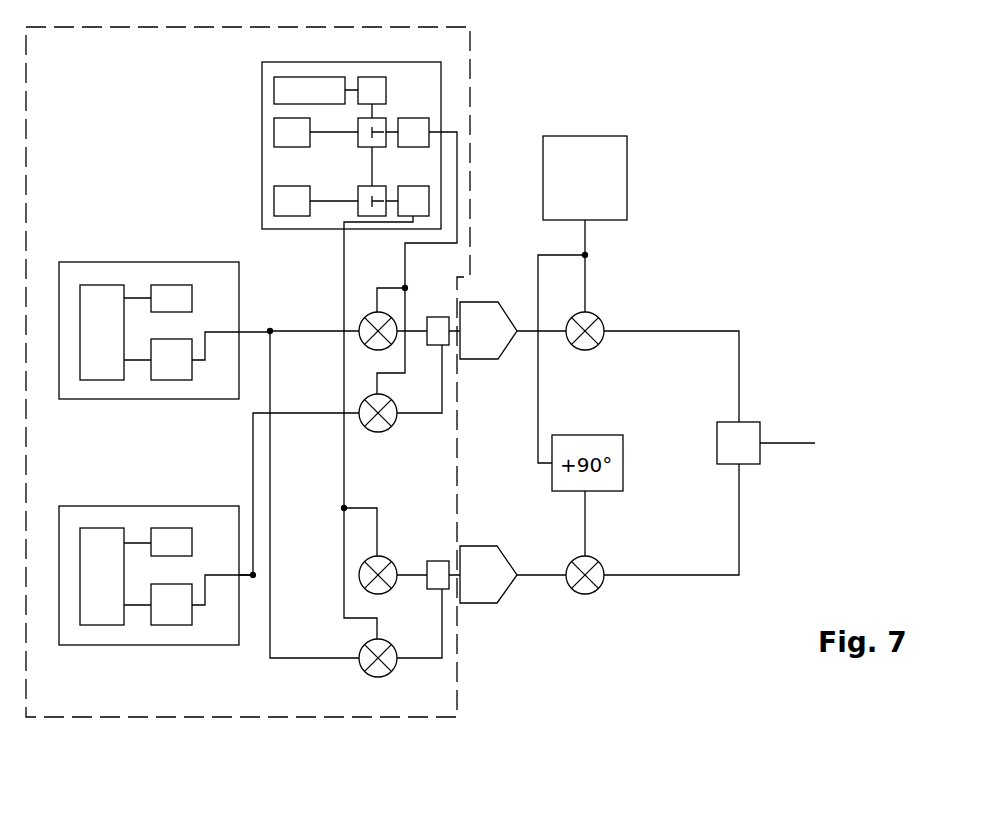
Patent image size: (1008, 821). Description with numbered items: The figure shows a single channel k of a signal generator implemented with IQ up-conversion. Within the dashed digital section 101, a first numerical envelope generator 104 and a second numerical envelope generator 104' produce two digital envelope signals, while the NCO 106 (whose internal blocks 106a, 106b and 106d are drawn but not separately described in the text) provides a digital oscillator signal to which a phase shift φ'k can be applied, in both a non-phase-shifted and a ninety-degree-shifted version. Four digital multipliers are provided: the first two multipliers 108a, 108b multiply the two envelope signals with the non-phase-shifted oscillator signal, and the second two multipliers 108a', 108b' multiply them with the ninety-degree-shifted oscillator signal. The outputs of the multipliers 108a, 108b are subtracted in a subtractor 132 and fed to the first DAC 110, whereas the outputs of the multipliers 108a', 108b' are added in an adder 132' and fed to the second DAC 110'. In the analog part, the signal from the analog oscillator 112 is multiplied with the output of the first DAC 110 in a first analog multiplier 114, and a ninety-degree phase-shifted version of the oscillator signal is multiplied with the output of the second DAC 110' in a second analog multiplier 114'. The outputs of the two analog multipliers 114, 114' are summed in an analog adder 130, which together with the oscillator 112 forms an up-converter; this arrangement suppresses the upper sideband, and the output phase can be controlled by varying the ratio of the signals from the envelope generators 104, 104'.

The digital section 101 is at (192, 718).
The first numerical envelope generator 104 is at (164, 298).
The second numerical envelope generator 104' is at (156, 544).
The NCO 106 is at (317, 338).
The NCO frequency block 106a is at (312, 77).
The phase input block 106b is at (273, 125).
The quadrature output line 106d is at (345, 223).
The digital multiplier 108a is at (341, 348).
The digital multiplier 108b is at (341, 430).
The digital multiplier 108a' is at (338, 593).
The digital multiplier 108b' is at (338, 675).
The first DAC 110 is at (507, 299).
The second DAC 110' is at (507, 559).
The analog oscillator 112 is at (630, 175).
The first analog multiplier 114 is at (652, 351).
The second analog multiplier 114' is at (652, 529).
The analog adder 130 is at (748, 422).
The subtractor 132 is at (460, 377).
The adder 132' is at (463, 621).
The channel k is at (598, 85).